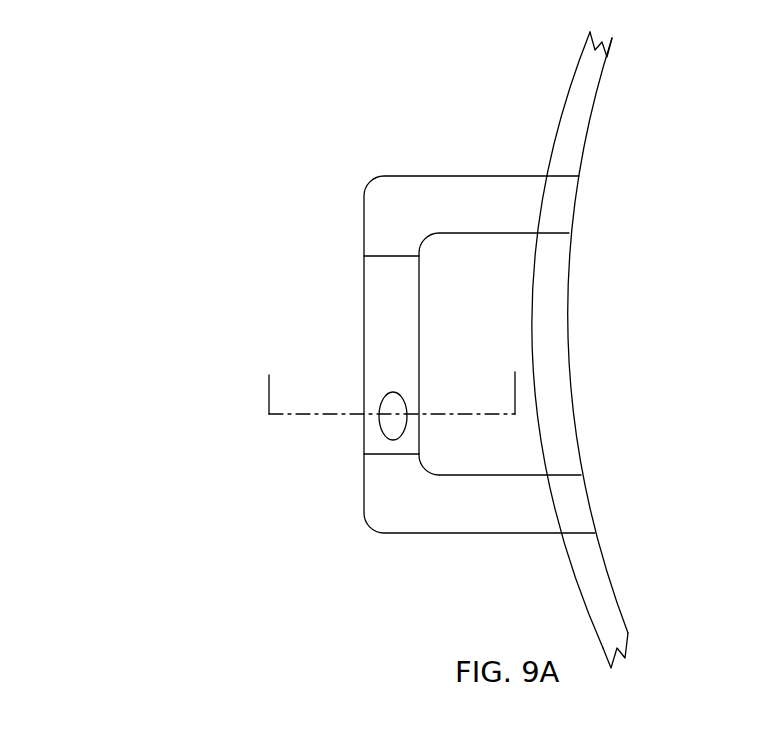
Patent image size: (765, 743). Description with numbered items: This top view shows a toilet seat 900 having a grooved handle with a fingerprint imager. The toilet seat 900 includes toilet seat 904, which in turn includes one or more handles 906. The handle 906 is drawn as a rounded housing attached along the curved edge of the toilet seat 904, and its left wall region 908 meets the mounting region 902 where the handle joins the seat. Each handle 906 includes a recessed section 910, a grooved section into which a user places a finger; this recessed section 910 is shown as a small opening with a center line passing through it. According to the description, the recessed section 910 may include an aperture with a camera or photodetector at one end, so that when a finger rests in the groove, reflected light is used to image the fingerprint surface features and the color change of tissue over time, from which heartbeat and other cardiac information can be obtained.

The toilet seat 900 is at (183, 83).
The mounting surface 902 is at (665, 345).
The toilet seat 904 is at (570, 123).
The handle 906 is at (446, 200).
The housing side wall 908 is at (377, 285).
The recessed section 910 is at (387, 431).